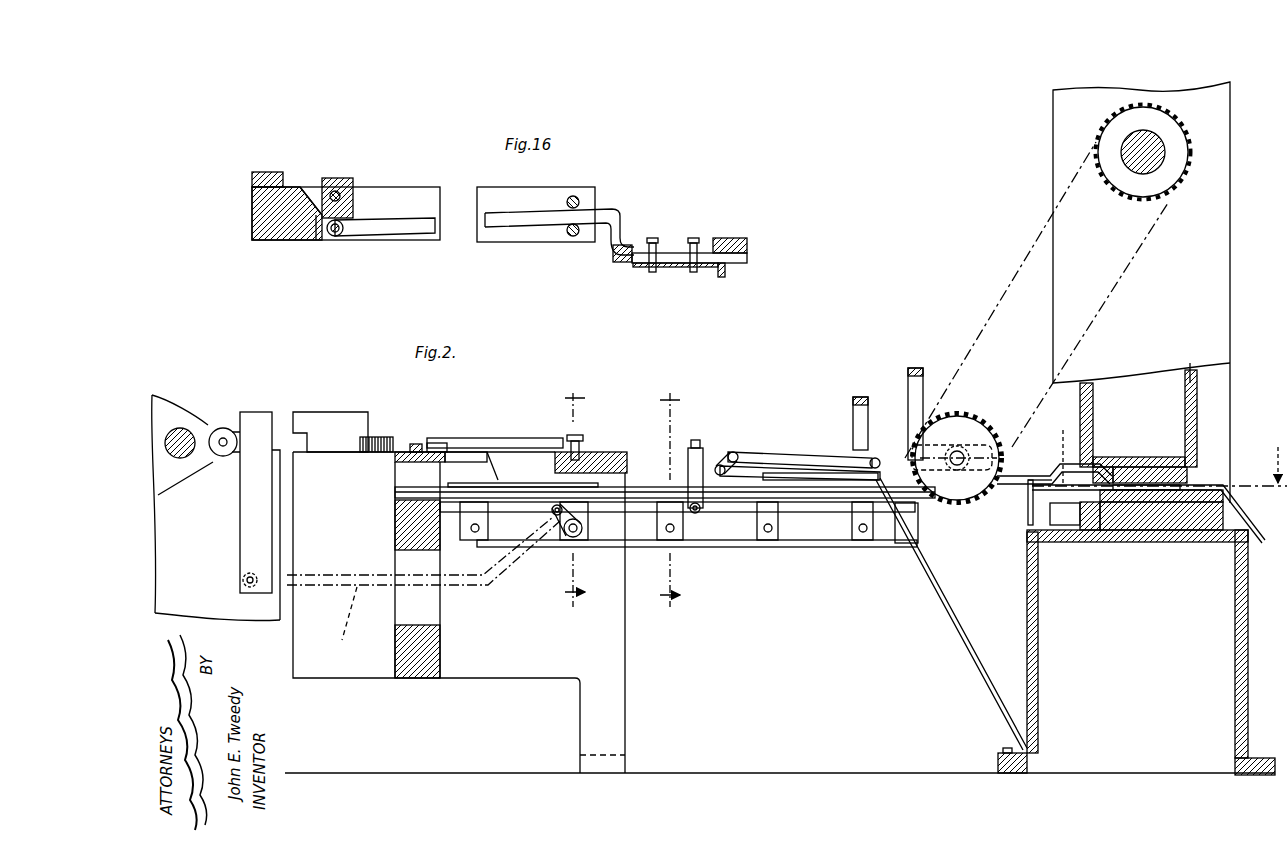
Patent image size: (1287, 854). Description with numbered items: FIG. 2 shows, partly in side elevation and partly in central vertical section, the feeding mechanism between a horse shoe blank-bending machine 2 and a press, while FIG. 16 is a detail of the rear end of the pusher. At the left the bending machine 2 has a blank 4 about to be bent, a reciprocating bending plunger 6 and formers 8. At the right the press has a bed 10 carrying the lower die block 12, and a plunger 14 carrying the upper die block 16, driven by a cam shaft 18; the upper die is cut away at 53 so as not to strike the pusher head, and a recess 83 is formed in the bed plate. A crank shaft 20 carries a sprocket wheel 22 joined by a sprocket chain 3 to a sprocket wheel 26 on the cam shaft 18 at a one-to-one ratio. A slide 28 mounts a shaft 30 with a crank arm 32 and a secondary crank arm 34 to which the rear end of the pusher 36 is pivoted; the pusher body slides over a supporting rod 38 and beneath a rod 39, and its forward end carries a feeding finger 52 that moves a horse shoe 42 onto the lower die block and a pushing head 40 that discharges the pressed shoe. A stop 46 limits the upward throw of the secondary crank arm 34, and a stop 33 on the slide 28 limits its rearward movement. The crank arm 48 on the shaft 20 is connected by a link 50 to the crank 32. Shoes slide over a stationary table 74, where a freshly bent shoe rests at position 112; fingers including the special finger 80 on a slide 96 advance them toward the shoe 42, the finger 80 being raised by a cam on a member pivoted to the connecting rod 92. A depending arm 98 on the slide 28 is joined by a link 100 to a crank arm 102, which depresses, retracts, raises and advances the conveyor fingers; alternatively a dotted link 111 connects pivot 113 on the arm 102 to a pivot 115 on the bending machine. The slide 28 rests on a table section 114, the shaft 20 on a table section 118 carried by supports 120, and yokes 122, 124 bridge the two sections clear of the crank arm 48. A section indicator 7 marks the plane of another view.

In FIG. 2, the horse shoe blank-bending machine 2 is at (397, 414).
In FIG. 2, the sprocket chain 3 is at (1118, 305).
In FIG. 2, the blank 4 is at (415, 444).
In FIG. 2, the reciprocating bending plunger 6 is at (345, 440).
In FIG. 2, the section line arrows 7 is at (1171, 448).
In FIG. 2, the formers 8 is at (515, 438).
In FIG. 2, the bed of the press 10 is at (1125, 530).
In FIG. 2, the lower die block 12 is at (1175, 502).
In FIG. 2, the plunger 14 is at (1138, 418).
In FIG. 2, the upper die block 16 is at (1158, 470).
In FIG. 2, the cam shaft 18 is at (1158, 140).
In FIG. 2, the crank shaft 20 is at (958, 450).
In FIG. 2, the sprocket wheel 22 is at (975, 420).
In FIG. 2, the sprocket wheel 26 is at (1188, 160).
In FIG. 16, the slide 28 is at (252, 215).
In FIG. 2, the slide 28 is at (762, 452).
In FIG. 16, the shaft 30 is at (335, 191).
In FIG. 2, the shaft 30 is at (734, 452).
In FIG. 2, the crank arm 32 is at (718, 466).
In FIG. 16, the stop 33 is at (310, 228).
In FIG. 16, the secondary crank arm 34 is at (345, 178).
In FIG. 16, the pusher 36 is at (395, 218).
In FIG. 2, the pusher 36 is at (1040, 476).
In FIG. 16, the supporting rod 38 is at (572, 237).
In FIG. 16, the rod 39 is at (575, 196).
In FIG. 2, the pushing finger or head 40 is at (1105, 467).
In FIG. 2, the horse shoe 42 is at (1065, 525).
In FIG. 16, the stop 46 is at (306, 187).
In FIG. 2, the crank arm 48 is at (880, 458).
In FIG. 2, the link 50 is at (795, 472).
In FIG. 16, the feeding finger 52 is at (720, 278).
In FIG. 2, the feeding finger 52 is at (1030, 480).
In FIG. 2, the cut-away of upper die 53 is at (1125, 483).
In FIG. 2, the stationary table 74 is at (603, 473).
In FIG. 2, the special finger 80 is at (935, 512).
In FIG. 2, the recess 83 is at (1032, 555).
In FIG. 2, the connecting rod 92 is at (808, 547).
In FIG. 2, the slide 96 is at (718, 507).
In FIG. 16, the depending arm 98 is at (262, 172).
In FIG. 2, the depending arm 98 is at (688, 475).
In FIG. 2, the link 100 is at (612, 512).
In FIG. 2, the crank arm 102 is at (570, 528).
In FIG. 2, the link 111 is at (352, 615).
In FIG. 2, the shoe position 112 is at (508, 483).
In FIG. 2, the pivot 113 is at (553, 511).
In FIG. 2, the table section 114 is at (797, 480).
In FIG. 2, the pivot 115 is at (243, 580).
In FIG. 2, the table section 118 is at (867, 480).
In FIG. 2, the supports 120 is at (1028, 500).
In FIG. 2, the yoke 122 is at (860, 397).
In FIG. 2, the yoke 124 is at (915, 368).